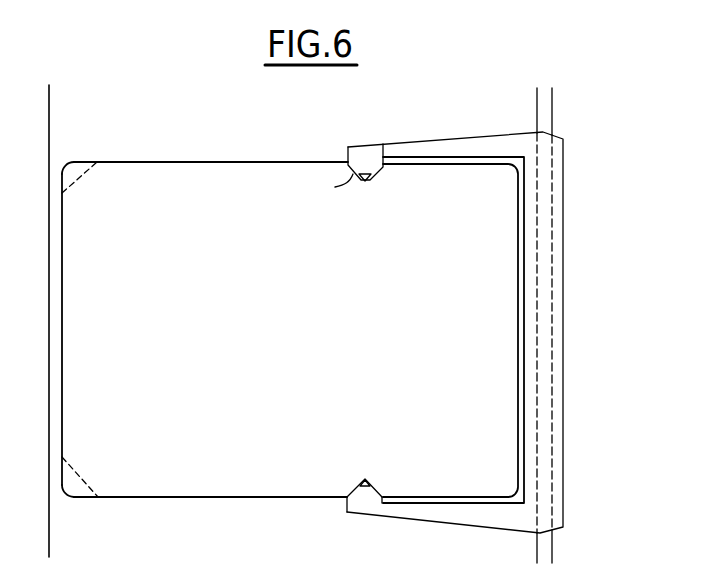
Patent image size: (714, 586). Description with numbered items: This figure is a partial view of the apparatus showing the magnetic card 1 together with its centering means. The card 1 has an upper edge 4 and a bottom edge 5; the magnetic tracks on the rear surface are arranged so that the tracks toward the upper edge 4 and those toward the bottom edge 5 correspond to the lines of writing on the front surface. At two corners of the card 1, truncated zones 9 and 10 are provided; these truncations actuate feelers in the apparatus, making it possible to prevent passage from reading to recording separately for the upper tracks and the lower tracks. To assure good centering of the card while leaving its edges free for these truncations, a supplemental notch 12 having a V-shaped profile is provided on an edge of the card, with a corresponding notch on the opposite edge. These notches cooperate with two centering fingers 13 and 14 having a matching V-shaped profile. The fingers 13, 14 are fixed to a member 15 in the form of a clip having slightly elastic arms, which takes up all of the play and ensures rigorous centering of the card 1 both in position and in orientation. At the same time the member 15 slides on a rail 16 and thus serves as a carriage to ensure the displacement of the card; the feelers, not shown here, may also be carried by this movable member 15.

The card 1 is at (205, 330).
The upper edge 4 is at (203, 160).
The bottom edge 5 is at (232, 497).
The truncated zone 9 is at (73, 168).
The truncated zone 10 is at (77, 486).
The supplemental notch 12 is at (355, 486).
The centering finger 13 is at (367, 158).
The centering finger 14 is at (350, 495).
The member 15 is at (568, 298).
The rail 16 is at (543, 108).